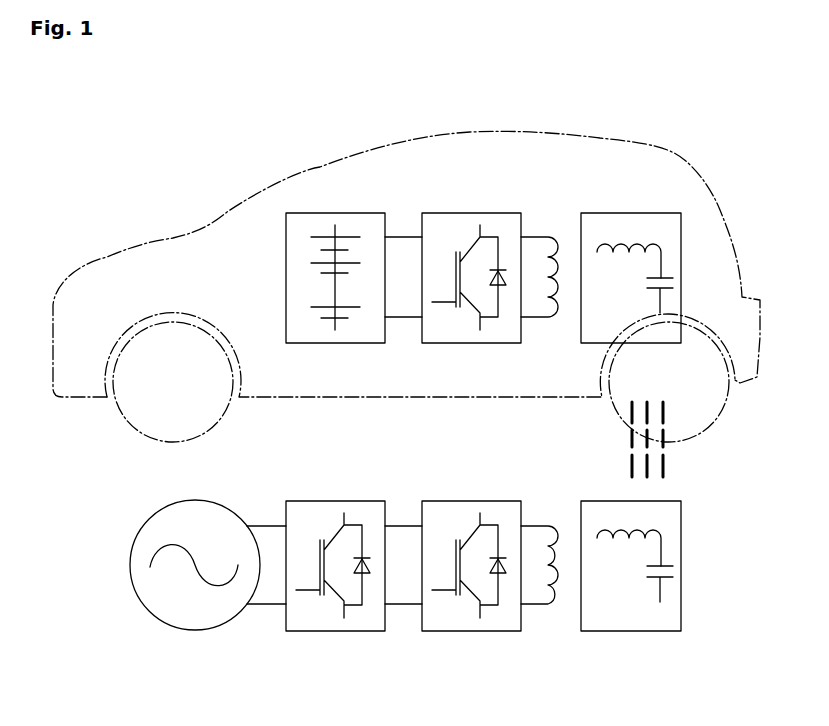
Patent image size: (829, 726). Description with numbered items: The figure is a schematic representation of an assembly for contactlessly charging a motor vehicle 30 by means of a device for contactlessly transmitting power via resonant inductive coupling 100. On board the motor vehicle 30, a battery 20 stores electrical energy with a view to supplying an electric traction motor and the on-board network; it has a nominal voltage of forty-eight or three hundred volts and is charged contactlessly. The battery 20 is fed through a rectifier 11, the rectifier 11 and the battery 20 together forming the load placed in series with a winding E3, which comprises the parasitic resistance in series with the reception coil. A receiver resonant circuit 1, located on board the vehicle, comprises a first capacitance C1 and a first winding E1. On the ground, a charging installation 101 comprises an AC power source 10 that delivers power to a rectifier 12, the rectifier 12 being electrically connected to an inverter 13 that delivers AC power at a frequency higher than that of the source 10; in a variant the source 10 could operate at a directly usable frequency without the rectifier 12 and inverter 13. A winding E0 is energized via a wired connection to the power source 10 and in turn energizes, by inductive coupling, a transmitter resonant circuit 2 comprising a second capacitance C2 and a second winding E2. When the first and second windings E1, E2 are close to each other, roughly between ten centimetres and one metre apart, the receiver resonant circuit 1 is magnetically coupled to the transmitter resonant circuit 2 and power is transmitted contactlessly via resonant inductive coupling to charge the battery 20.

The device for contactlessly transmitting power via resonant inductive coupling 100 is at (81, 474).
The motor vehicle 30 is at (92, 272).
The battery 20 is at (308, 213).
The rectifier 11 is at (495, 213).
The winding E3 is at (560, 250).
The receiver resonant circuit 1 is at (683, 296).
The first winding E1 is at (637, 247).
The first capacitance C1 is at (668, 277).
The charging station 101 is at (197, 673).
The AC power source 10 is at (145, 610).
The rectifier 12 is at (311, 631).
The inverter 13 is at (502, 631).
The winding E0 is at (557, 527).
The transmitter resonant circuit 2 is at (700, 615).
The second winding E2 is at (652, 538).
The second capacitance C2 is at (668, 566).